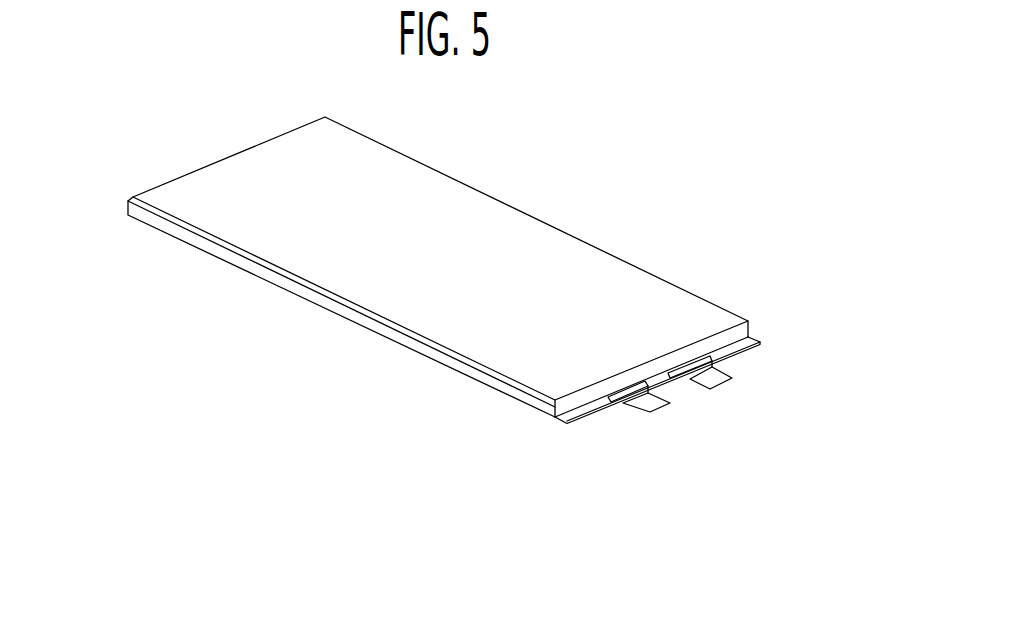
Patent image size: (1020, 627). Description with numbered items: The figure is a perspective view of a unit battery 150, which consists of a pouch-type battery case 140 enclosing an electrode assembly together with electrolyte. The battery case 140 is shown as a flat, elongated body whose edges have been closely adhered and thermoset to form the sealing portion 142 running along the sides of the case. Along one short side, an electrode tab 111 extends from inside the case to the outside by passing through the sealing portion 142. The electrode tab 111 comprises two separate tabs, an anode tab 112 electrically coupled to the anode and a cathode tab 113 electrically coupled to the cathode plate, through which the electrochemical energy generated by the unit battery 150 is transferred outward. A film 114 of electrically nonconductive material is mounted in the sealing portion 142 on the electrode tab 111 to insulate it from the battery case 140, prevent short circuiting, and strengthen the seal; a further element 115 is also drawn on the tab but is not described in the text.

The unit battery 150 is at (695, 156).
The battery case 140 is at (346, 283).
The sealing portion 142 is at (520, 397).
The electrode tab 111 is at (703, 431).
The anode tab 112 is at (732, 406).
The cathode tab 113 is at (665, 405).
The film 114 is at (717, 363).
The second insulating tape 115 is at (621, 405).